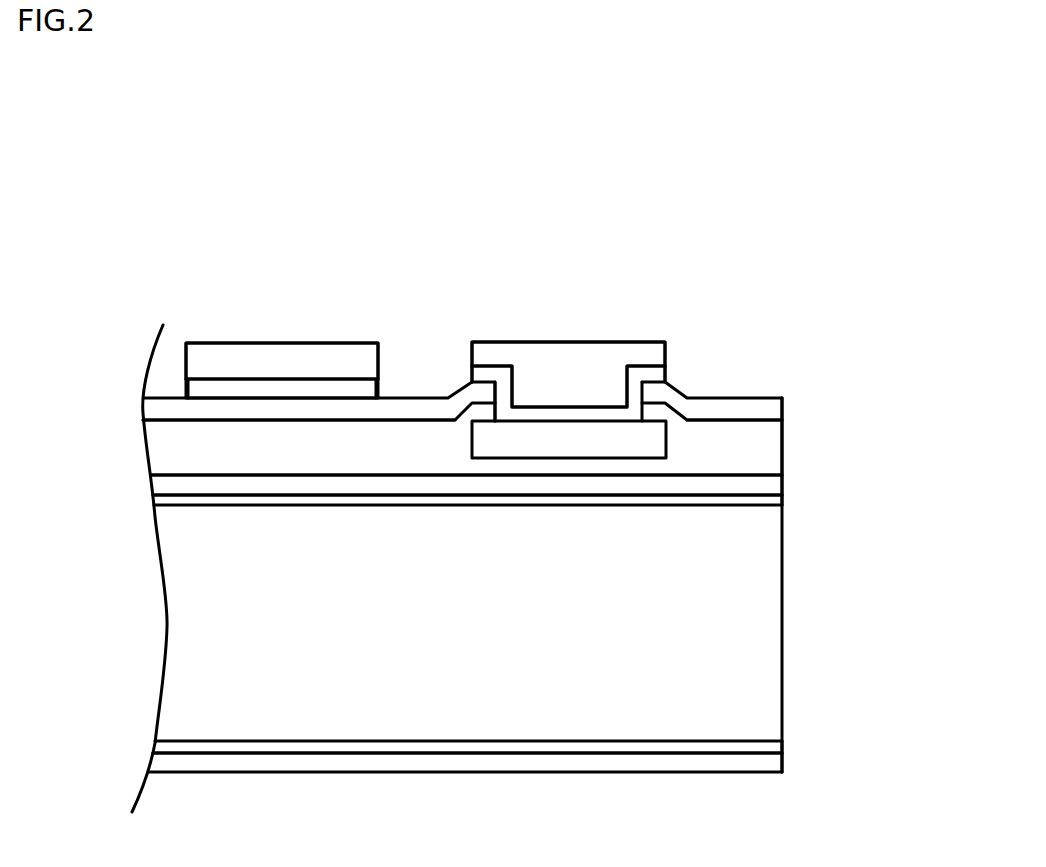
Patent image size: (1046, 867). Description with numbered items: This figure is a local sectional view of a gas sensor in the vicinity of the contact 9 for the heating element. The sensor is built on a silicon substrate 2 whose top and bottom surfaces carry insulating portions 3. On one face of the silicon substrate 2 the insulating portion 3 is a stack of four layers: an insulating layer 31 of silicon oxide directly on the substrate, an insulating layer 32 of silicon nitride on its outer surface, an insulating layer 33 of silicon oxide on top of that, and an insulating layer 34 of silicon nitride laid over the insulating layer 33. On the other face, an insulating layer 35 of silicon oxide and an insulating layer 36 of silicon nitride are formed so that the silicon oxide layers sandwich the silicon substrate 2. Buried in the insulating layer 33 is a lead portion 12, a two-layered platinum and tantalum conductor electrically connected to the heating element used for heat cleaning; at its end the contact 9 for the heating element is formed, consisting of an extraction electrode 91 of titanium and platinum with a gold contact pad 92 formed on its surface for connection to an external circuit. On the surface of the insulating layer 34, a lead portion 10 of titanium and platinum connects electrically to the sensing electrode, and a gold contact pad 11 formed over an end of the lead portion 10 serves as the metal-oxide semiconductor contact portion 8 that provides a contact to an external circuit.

The silicon substrate 2 is at (758, 627).
The insulating portion 3 is at (883, 382).
The metal-oxide semiconductor contact portion 8 is at (393, 212).
The contact for heating element 9 is at (693, 212).
The lead portion 10 is at (315, 388).
The contact pad 11 is at (282, 370).
The lead portion 12 is at (575, 440).
The insulating layer 31 is at (762, 497).
The insulating layer 32 is at (758, 483).
The insulating layer 33 is at (758, 444).
The insulating layer 34 is at (758, 408).
The insulating layer 35 is at (758, 746).
The insulating layer 36 is at (758, 762).
The extraction electrode 91 is at (637, 375).
The contact pad 92 is at (582, 383).